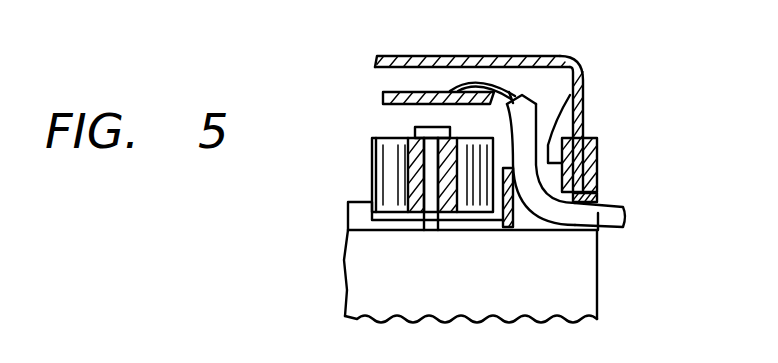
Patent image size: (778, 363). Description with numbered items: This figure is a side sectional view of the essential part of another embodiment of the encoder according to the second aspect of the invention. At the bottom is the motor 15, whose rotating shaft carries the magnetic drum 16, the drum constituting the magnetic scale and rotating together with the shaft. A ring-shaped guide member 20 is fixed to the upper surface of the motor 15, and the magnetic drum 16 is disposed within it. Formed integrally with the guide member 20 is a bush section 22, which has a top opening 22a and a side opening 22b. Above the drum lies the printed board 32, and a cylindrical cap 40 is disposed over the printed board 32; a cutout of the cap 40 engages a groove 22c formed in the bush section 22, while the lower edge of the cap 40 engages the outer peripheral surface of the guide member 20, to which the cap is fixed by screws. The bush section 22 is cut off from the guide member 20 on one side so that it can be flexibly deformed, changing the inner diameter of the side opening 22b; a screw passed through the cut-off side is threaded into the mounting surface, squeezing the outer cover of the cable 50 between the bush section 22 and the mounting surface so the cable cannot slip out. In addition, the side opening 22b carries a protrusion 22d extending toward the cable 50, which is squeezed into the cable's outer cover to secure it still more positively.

The motor 15 is at (583, 275).
The magnetic drum 16 is at (372, 167).
The guide member 20 is at (348, 212).
The bush section 22 is at (587, 168).
The top opening 22a is at (583, 83).
The side opening 22b is at (590, 192).
The groove 22c is at (583, 120).
The protrusion 22d is at (593, 200).
The printed board 32 is at (388, 93).
The cylindrical cap 40 is at (457, 55).
The cable 50 is at (527, 107).